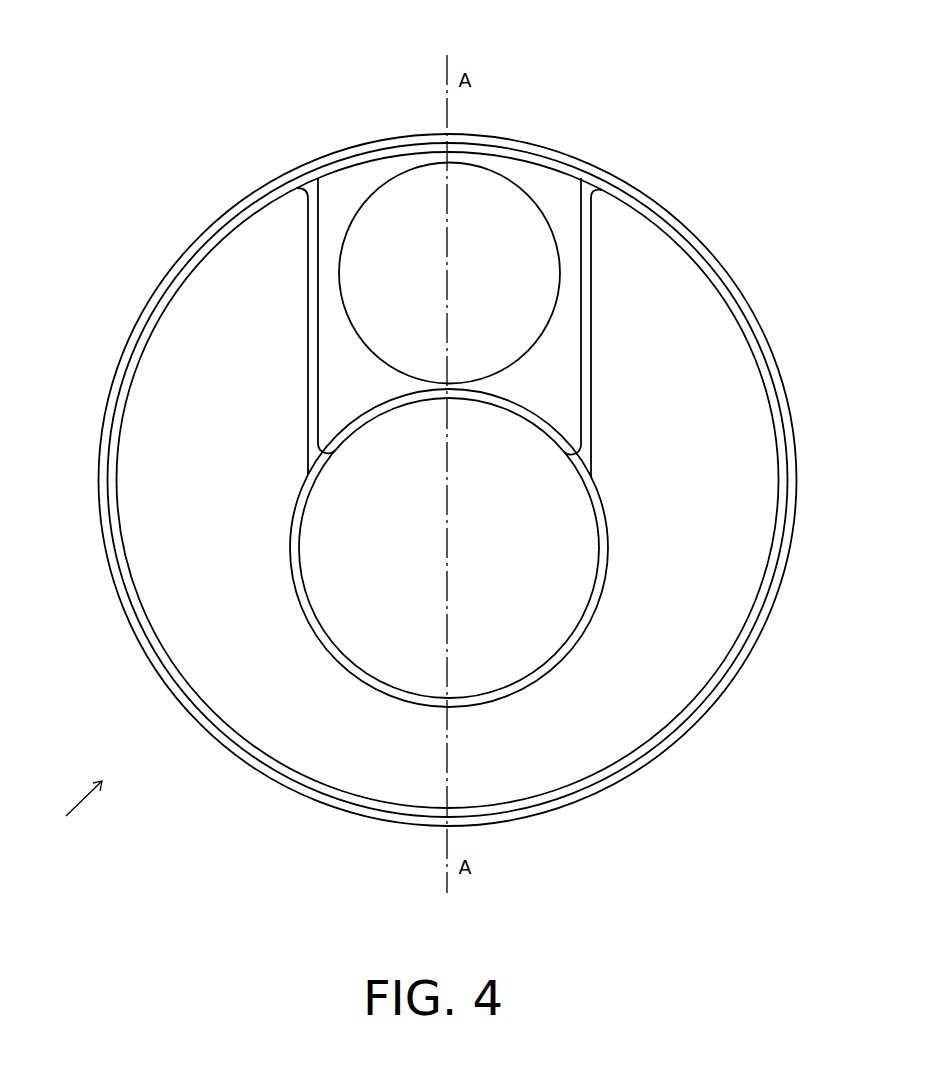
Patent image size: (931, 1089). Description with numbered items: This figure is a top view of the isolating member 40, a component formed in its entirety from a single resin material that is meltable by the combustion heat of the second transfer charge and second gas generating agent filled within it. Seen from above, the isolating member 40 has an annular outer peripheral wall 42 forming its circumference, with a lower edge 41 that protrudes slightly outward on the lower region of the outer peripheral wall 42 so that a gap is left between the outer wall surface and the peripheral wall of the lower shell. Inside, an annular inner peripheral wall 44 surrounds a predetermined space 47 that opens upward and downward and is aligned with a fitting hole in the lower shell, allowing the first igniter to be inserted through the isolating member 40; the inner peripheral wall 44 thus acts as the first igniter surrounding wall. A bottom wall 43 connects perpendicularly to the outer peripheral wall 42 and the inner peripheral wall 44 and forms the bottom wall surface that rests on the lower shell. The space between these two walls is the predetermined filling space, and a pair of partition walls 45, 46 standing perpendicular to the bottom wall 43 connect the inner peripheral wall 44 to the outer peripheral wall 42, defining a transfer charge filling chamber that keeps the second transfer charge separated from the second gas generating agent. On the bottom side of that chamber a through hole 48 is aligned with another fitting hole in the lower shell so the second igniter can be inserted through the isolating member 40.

The isolating member 40 is at (70, 849).
The lower edge 41 is at (352, 814).
The outer peripheral wall 42 is at (656, 750).
The bottom wall 43 is at (683, 660).
The inner peripheral wall 44 is at (288, 558).
The partition wall 45 is at (592, 331).
The partition wall 46 is at (310, 322).
The predetermined space 47 is at (368, 600).
The through hole 48 is at (510, 221).